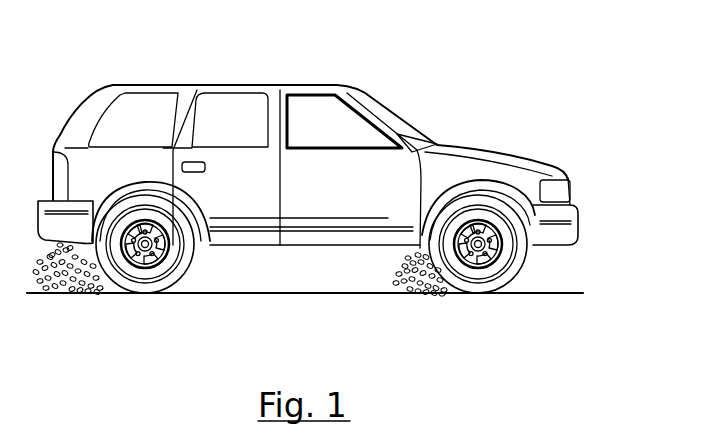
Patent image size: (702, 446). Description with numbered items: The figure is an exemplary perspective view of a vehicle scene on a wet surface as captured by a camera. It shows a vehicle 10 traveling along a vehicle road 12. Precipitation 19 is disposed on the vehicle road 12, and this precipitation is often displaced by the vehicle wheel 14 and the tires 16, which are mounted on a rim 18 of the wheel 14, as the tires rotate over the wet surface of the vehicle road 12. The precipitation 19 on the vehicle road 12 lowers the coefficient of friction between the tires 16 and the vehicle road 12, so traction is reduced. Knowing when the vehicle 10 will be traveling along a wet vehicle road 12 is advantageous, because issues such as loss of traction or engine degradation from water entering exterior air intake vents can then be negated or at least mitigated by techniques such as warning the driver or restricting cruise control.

The vehicle 10 is at (400, 108).
The vehicle road 12 is at (192, 293).
The vehicle wheel 14 is at (480, 290).
The tires 16 is at (532, 279).
The rim 18 is at (498, 244).
The precipitation 19 is at (423, 284).